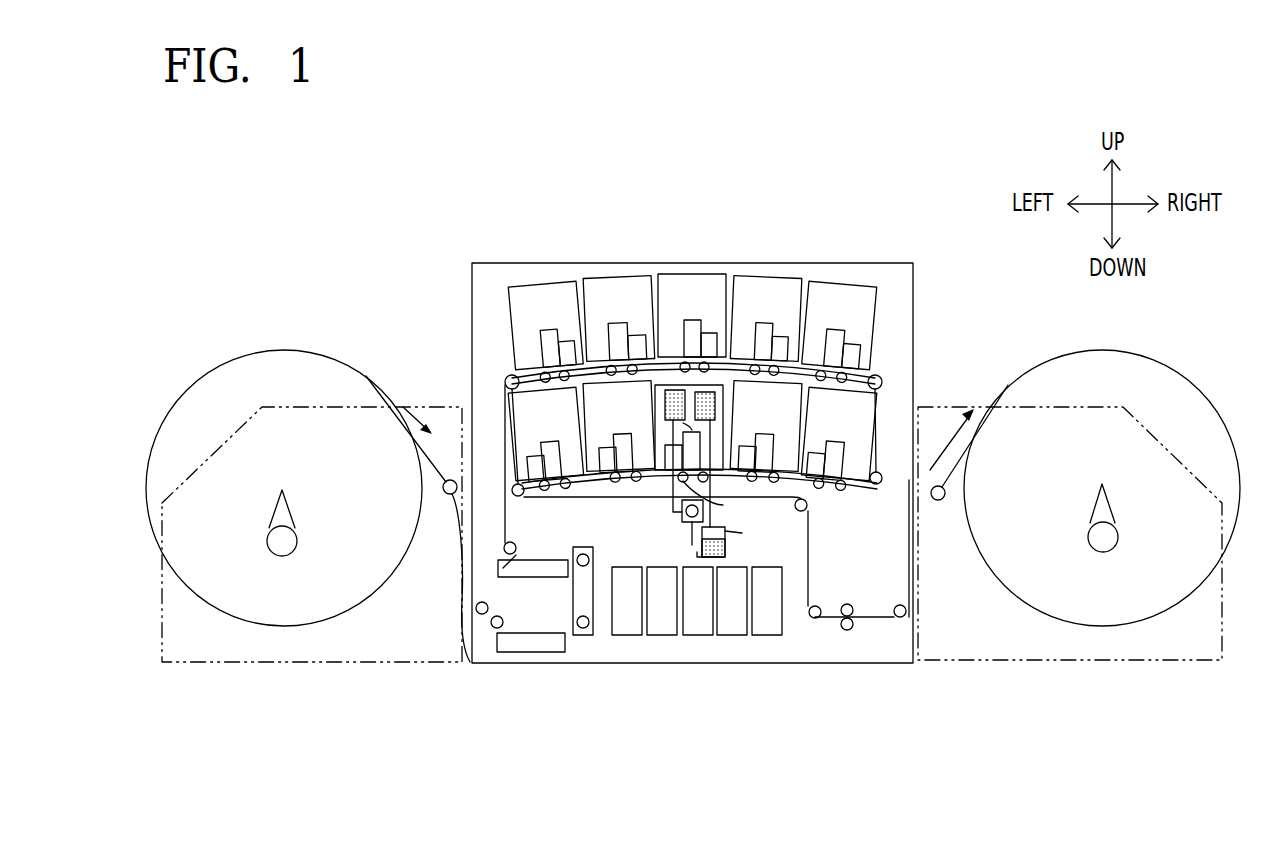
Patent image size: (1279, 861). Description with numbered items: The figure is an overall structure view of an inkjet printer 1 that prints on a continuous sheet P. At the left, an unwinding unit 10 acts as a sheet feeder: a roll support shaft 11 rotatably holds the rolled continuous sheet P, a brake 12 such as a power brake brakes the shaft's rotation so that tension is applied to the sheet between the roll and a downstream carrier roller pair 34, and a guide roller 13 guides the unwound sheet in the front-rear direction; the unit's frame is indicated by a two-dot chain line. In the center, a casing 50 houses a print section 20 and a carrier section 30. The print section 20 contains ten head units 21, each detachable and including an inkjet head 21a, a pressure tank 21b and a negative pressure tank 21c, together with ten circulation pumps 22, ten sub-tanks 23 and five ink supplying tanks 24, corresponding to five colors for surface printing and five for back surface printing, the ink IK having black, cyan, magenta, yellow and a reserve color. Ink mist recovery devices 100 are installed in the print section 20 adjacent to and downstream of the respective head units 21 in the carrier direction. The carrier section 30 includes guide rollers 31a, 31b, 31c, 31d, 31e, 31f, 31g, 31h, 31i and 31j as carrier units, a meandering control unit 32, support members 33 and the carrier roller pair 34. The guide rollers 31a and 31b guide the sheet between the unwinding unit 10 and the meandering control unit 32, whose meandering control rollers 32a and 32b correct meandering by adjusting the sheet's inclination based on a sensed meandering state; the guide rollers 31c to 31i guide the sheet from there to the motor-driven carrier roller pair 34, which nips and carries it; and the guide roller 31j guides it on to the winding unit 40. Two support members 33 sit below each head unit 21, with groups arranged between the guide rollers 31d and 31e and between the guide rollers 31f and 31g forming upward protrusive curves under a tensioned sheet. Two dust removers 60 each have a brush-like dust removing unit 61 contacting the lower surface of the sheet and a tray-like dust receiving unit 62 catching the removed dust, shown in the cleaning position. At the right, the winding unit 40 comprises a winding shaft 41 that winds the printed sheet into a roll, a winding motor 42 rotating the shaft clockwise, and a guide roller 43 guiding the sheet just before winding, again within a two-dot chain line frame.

The inkjet printer 1 is at (332, 248).
The unwinding unit 10 is at (295, 668).
The roll support shaft 11 is at (280, 488).
The brake 12 is at (282, 541).
The guide roller 13 is at (447, 480).
The print section 20 is at (500, 278).
The head unit 21 is at (705, 364).
The inkjet head 21a is at (672, 478).
The pressure tank 21b is at (676, 390).
The negative pressure tank 21c is at (709, 392).
The circulation pump 22 is at (702, 533).
The sub-tank 23 is at (742, 533).
The ink supplying tank 24 is at (766, 638).
The carrier section 30 is at (472, 655).
The guide roller 31a is at (482, 614).
The guide roller 31b is at (497, 628).
The guide roller 31c is at (503, 570).
The guide roller 31d is at (506, 378).
The guide roller 31e is at (883, 377).
The guide roller 31f is at (878, 430).
The guide roller 31g is at (517, 548).
The guide roller 31h is at (818, 505).
The guide roller 31i is at (815, 620).
The guide roller 31j is at (900, 618).
The meandering control unit 32 is at (588, 640).
The meandering control roller 32a is at (596, 640).
The meandering control roller 32b is at (548, 493).
The support member 33 is at (703, 481).
The carrier roller pair 34 is at (846, 631).
The winding unit 40 is at (1020, 670).
The winding shaft 41 is at (1102, 484).
The winding motor 42 is at (1103, 540).
The guide roller 43 is at (938, 500).
The casing 50 is at (697, 362).
The dust remover 60 is at (458, 645).
The dust removing unit 61 is at (498, 562).
The dust receiving unit 62 is at (498, 574).
The ink mist recovery device 100 is at (562, 338).
The ink IK is at (677, 395).
The continuous sheet P is at (232, 372).